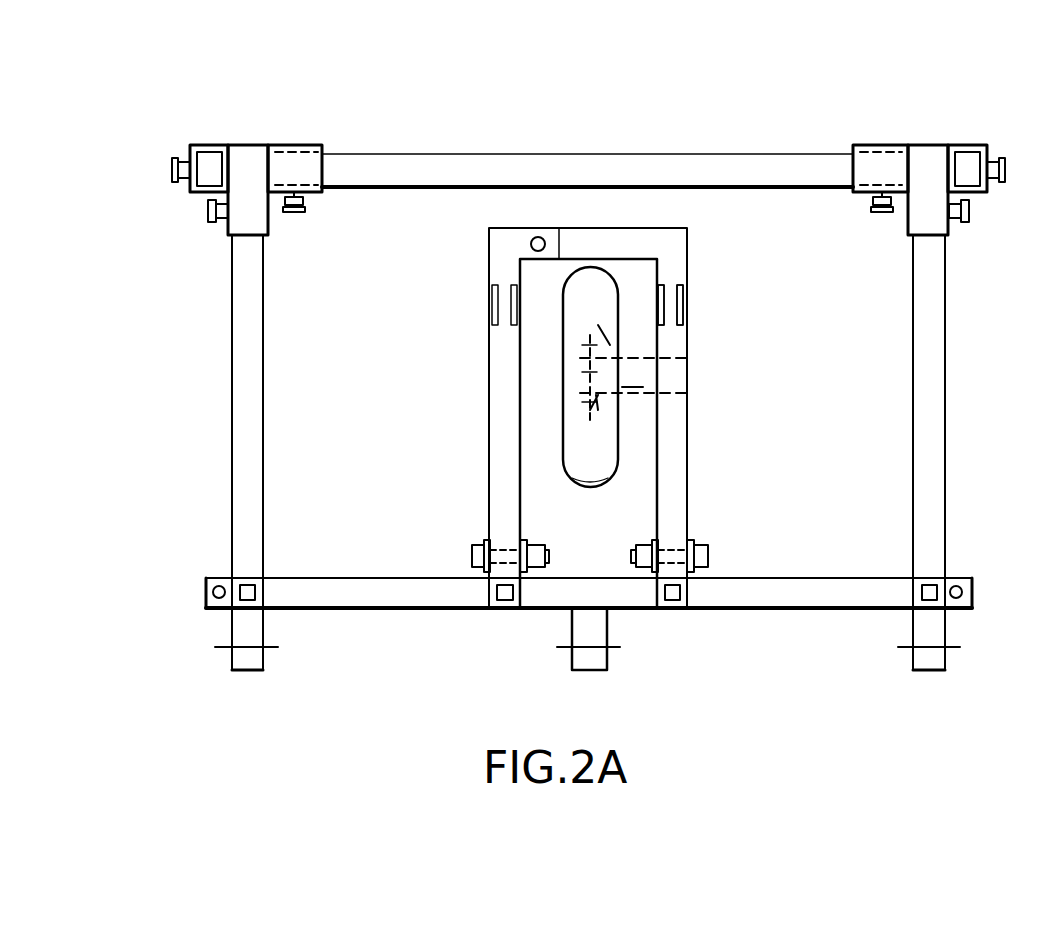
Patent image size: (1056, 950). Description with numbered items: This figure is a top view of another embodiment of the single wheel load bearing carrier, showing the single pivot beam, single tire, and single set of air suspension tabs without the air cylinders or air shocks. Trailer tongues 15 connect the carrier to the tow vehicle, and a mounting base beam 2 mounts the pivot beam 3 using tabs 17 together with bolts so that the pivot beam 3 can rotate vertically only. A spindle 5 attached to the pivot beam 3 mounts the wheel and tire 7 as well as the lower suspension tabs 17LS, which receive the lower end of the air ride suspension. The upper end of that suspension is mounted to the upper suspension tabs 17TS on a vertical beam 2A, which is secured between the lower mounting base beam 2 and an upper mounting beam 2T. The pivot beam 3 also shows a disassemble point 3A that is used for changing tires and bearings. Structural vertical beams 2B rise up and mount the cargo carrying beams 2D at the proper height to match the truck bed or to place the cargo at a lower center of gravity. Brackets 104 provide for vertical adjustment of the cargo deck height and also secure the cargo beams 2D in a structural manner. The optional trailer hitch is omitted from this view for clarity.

The mounting base beam 2 is at (842, 578).
The vertical beam 2A is at (490, 598).
The structural vertical beam 2B is at (247, 585).
The cargo carrying beam 2D is at (495, 166).
The upper mounting beam 2T is at (382, 590).
The pivot beam 3 is at (490, 438).
The disassemble point 3A is at (525, 235).
The spindle 5 is at (650, 360).
The wheel and tire 7 is at (596, 293).
The trailer tongue 15 is at (265, 615).
The tab 17 is at (700, 540).
The lower suspension tab 17LS is at (683, 300).
The upper suspension tab 17TS is at (690, 530).
The bracket 104 is at (215, 208).